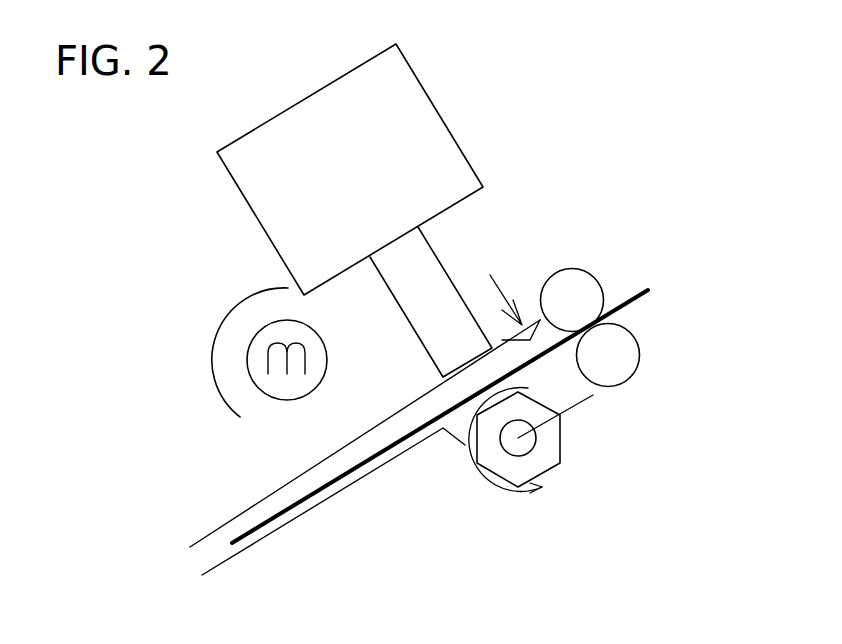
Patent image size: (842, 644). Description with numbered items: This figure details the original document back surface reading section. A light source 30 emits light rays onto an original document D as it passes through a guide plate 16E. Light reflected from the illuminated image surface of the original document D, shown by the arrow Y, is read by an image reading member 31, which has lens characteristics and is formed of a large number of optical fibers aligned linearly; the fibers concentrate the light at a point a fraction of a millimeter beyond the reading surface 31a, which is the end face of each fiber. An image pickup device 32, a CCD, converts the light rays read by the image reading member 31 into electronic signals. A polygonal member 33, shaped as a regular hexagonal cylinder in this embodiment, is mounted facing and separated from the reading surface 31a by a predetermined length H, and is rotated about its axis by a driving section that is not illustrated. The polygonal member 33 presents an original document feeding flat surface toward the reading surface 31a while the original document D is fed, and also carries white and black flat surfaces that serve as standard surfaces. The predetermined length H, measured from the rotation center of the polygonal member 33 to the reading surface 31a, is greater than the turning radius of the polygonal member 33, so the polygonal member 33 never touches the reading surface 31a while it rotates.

The image pickup device 32 is at (442, 112).
The image reading member 31 is at (435, 255).
The reading surface 31a is at (482, 353).
The light source 30 is at (238, 338).
The polygonal member 33 is at (548, 473).
The guide plate 16E is at (273, 497).
The original document D is at (375, 460).
The predetermined length H is at (603, 460).
The arrow indicating reflected light rays Y is at (493, 407).